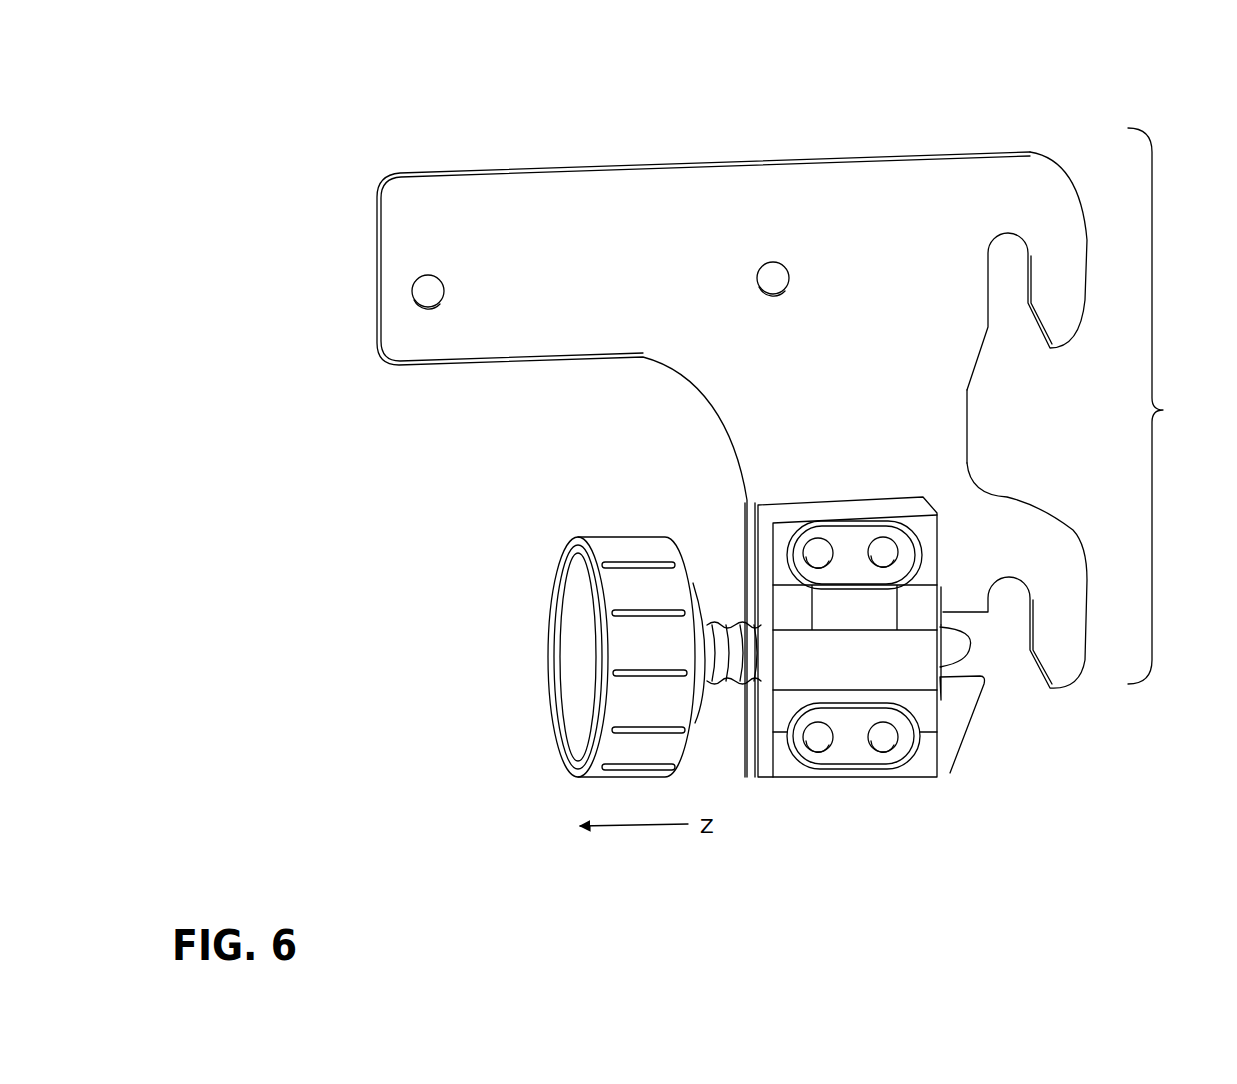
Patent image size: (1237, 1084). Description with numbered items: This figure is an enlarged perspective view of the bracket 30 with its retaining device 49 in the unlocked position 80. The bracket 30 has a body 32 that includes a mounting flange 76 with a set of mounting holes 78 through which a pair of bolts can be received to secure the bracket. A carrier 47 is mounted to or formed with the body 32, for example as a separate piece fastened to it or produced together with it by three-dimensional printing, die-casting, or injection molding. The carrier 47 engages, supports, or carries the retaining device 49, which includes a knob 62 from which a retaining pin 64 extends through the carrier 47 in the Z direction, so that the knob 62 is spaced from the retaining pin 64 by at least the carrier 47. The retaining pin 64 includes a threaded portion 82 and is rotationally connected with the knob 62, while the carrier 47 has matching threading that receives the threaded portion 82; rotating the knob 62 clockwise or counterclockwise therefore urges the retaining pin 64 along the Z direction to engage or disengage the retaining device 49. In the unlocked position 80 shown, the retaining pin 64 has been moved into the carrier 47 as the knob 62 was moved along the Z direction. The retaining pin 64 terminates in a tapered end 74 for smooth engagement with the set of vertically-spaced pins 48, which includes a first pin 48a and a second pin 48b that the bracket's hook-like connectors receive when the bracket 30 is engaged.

The bracket 30 is at (340, 130).
The mounting flange 76 is at (593, 227).
The mounting holes 78 is at (432, 290).
The set of vertically-spaced pins 48 is at (1180, 406).
The first pin 48a is at (1047, 582).
The second pin 48b is at (1057, 248).
The body 32 is at (846, 413).
The carrier 47 is at (847, 657).
The knob 62 is at (580, 652).
The retaining device 49 is at (626, 555).
The threaded portion 82 is at (737, 625).
The retaining pin 64 is at (940, 633).
The tapered end 74 is at (960, 647).
The unlocked position 80 is at (980, 642).